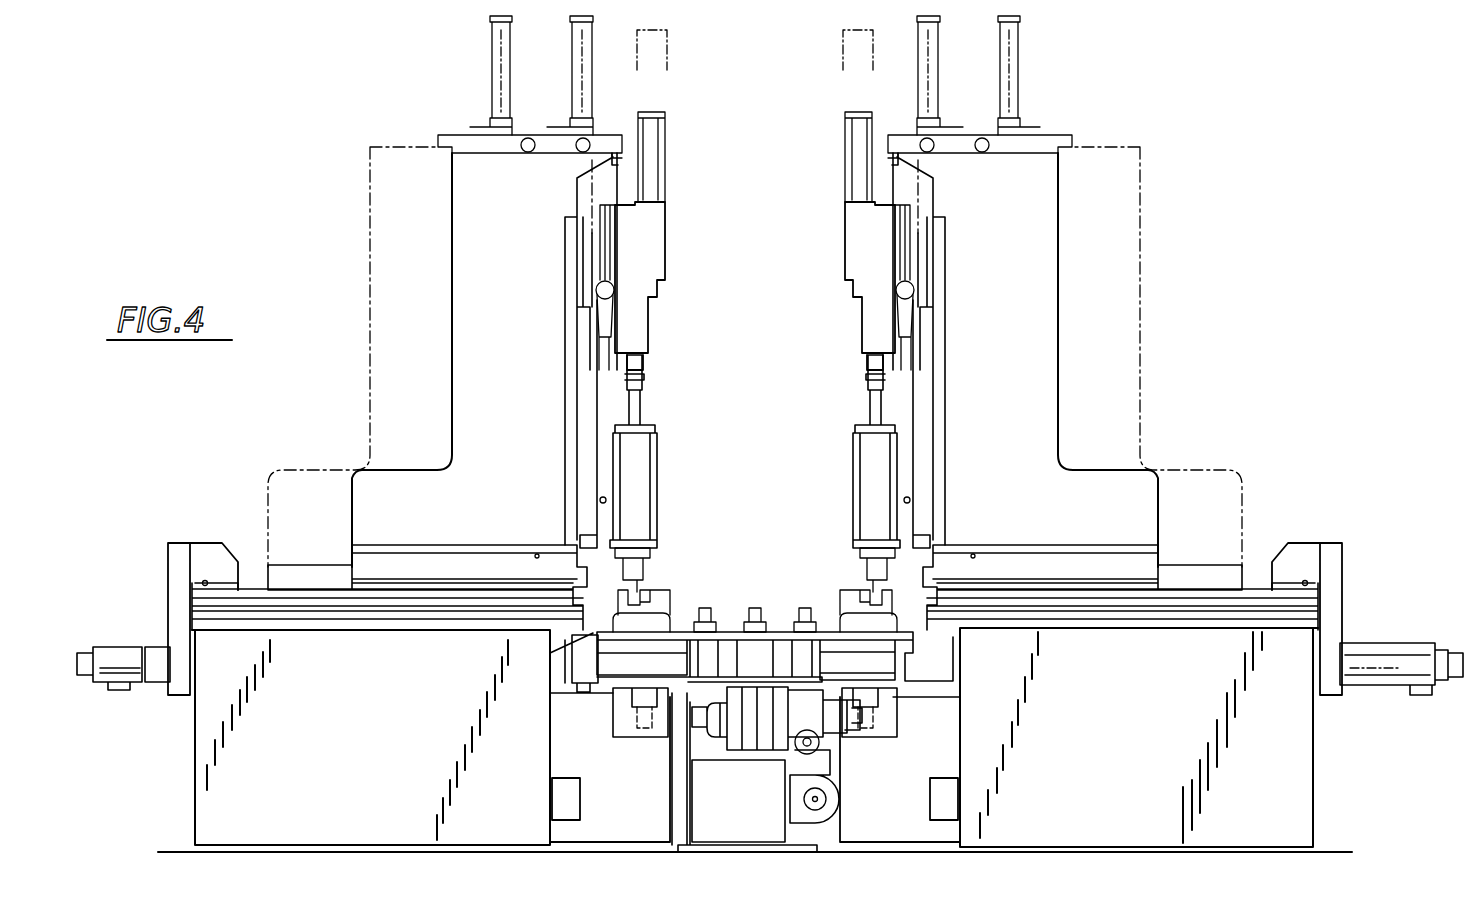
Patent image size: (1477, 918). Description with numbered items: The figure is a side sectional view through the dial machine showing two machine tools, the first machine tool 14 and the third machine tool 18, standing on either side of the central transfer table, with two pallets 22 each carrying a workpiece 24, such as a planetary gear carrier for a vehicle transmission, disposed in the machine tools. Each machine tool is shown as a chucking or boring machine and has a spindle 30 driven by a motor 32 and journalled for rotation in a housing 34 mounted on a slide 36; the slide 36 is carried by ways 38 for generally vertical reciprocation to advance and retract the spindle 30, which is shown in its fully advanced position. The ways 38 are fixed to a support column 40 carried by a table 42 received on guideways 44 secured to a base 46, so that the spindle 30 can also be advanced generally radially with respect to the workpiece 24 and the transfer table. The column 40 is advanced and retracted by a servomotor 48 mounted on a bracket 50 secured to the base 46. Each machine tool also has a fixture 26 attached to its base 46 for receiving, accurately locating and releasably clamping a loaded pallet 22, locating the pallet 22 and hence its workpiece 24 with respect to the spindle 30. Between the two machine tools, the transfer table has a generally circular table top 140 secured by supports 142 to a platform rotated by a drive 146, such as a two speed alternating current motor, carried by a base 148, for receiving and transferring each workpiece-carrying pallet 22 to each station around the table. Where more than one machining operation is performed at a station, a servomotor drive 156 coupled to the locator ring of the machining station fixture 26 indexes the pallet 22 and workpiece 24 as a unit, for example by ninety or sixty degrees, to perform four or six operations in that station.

The first machine tool 14 is at (267, 383).
The third machine tool 18 is at (1261, 268).
The pallet 22 is at (660, 613).
The workpiece 24 is at (645, 590).
The fixture 26 is at (630, 830).
The spindle 30 is at (655, 537).
The motor 32 is at (665, 152).
The housing 34 is at (657, 443).
The slide 36 is at (650, 245).
The ways 38 is at (578, 325).
The support column 40 is at (458, 240).
The table 42 is at (358, 478).
The guideways 44 is at (292, 570).
The base 46 is at (205, 735).
The servomotor 48 is at (122, 650).
The bracket 50 is at (178, 545).
The table top 140 is at (550, 653).
The supports 142 is at (801, 610).
The drive 146 is at (757, 745).
The base 148 is at (745, 835).
The servomotor drive 156 is at (625, 712).